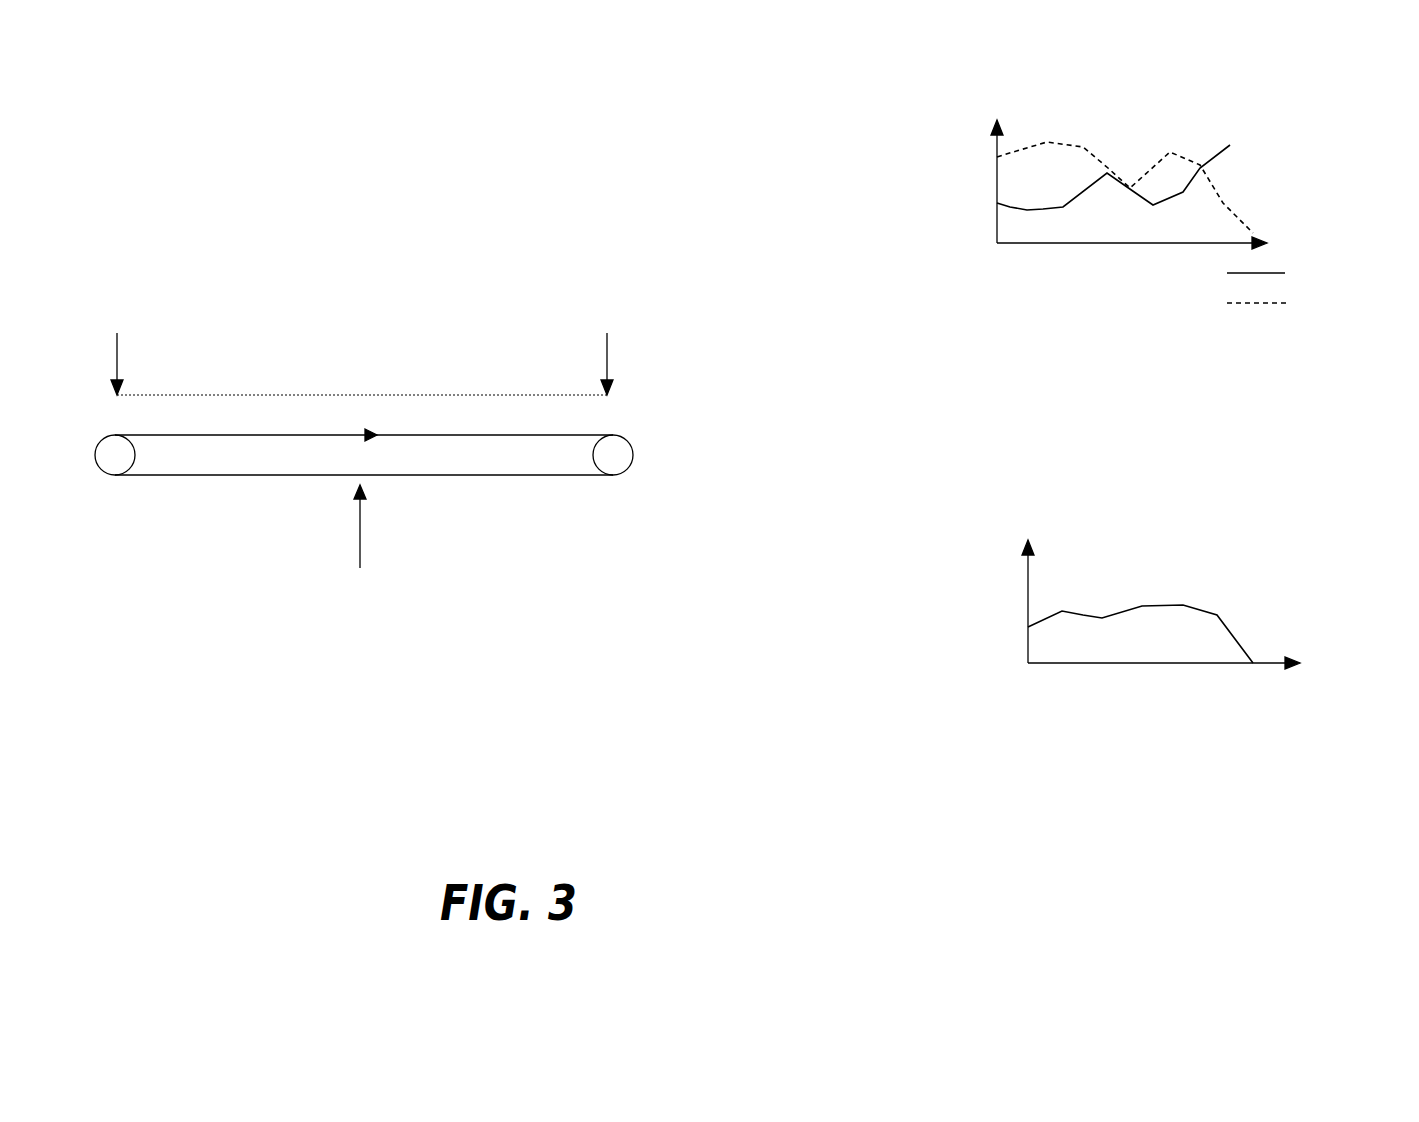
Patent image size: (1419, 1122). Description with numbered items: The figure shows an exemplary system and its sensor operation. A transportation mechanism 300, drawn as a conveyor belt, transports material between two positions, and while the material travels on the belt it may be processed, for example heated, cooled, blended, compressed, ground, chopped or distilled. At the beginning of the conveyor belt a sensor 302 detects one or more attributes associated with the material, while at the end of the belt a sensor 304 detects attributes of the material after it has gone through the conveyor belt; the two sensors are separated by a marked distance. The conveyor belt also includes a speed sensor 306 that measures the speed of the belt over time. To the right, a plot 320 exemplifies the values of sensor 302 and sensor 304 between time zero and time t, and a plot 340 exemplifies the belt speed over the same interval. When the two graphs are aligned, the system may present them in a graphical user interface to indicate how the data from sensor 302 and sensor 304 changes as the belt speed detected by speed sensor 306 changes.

The transportation mechanism 300 is at (750, 73).
The sensor 302 is at (135, 275).
The sensor 304 is at (618, 281).
The speed sensor 306 is at (371, 553).
The plot 320 is at (1240, 104).
The plot 340 is at (1235, 538).